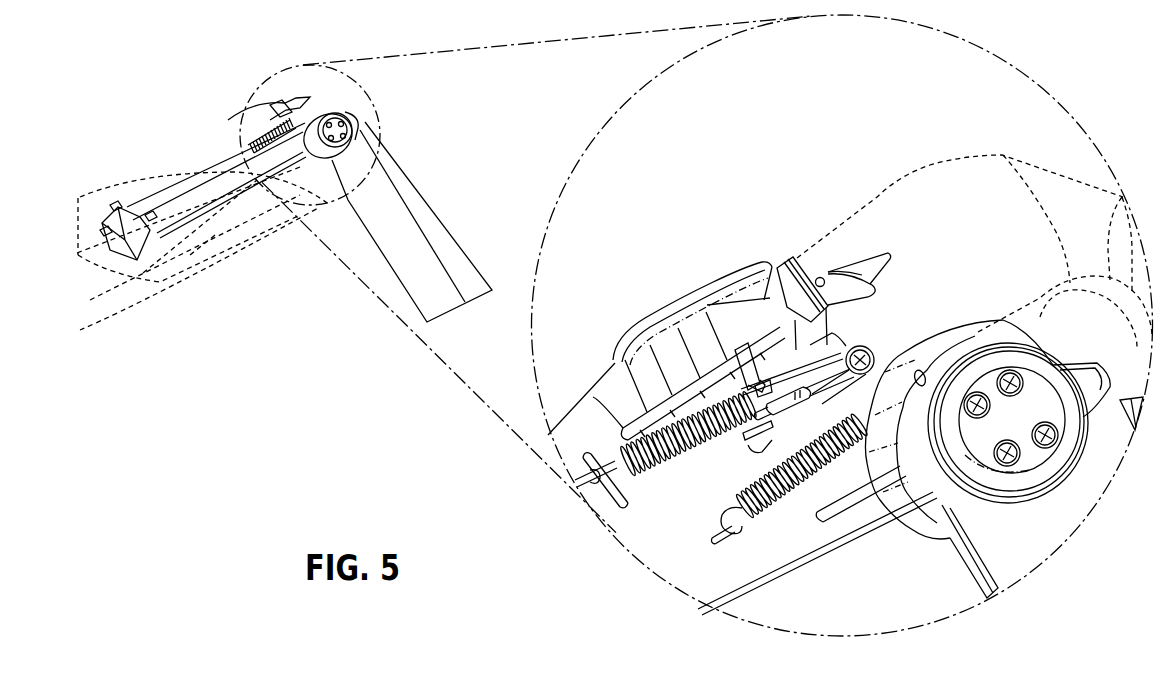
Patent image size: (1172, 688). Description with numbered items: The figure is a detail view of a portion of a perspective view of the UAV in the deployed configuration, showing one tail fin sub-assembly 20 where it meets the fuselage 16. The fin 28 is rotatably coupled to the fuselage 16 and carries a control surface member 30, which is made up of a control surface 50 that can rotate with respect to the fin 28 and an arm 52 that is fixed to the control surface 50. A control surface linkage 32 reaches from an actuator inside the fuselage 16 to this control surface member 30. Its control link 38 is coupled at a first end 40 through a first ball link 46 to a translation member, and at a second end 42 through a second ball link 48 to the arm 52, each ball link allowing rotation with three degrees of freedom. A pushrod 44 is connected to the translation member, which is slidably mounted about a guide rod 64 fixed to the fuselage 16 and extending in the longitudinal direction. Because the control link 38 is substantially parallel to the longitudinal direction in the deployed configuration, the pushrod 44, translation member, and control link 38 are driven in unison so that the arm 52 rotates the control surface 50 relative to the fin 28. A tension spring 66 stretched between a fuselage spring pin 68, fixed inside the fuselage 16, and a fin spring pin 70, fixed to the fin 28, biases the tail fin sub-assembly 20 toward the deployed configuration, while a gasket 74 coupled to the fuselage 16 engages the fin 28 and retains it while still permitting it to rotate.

The fuselage 16 is at (132, 160).
The tail fin sub-assembly 20 is at (1038, 552).
The fin 28 is at (1000, 580).
The control surface member 30 is at (849, 266).
The control surface linkage 32 is at (781, 287).
The control link 38 is at (803, 417).
The first end 40 is at (740, 433).
The second end 42 is at (870, 352).
The pushrod 44 is at (803, 574).
The first ball link 46 is at (753, 440).
The second ball link 48 is at (868, 350).
The control surface 50 is at (868, 260).
The arm 52 is at (845, 342).
The guide rod 64 is at (845, 522).
The tension spring 66 is at (622, 440).
The fuselage spring pin 68 is at (596, 507).
The fin spring pin 70 is at (742, 346).
The gasket 74 is at (1080, 486).